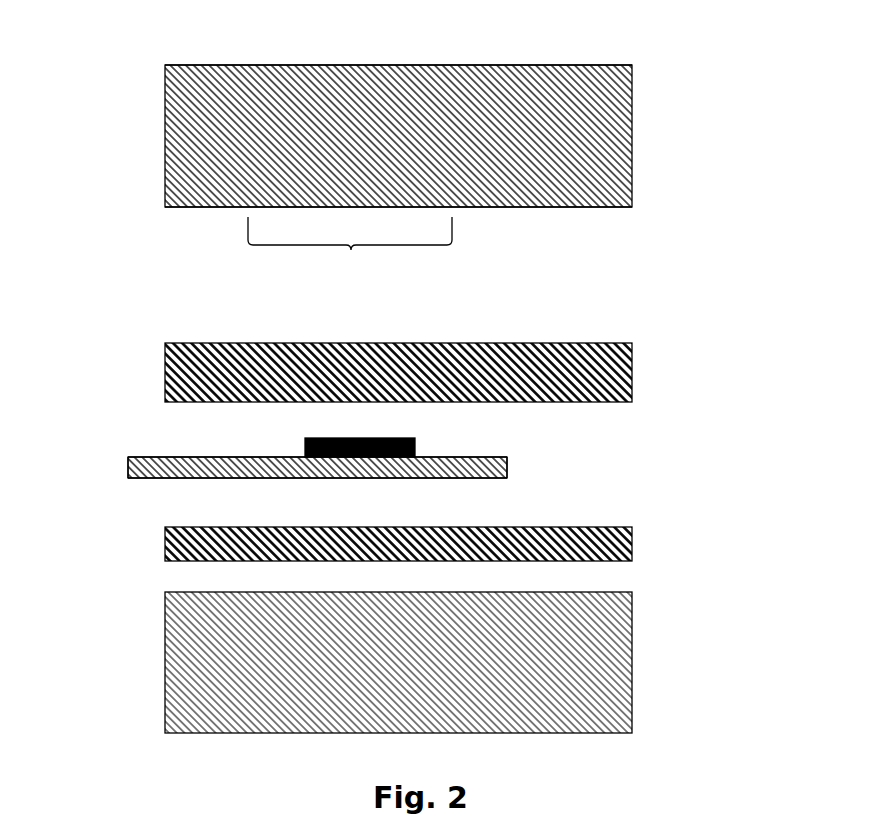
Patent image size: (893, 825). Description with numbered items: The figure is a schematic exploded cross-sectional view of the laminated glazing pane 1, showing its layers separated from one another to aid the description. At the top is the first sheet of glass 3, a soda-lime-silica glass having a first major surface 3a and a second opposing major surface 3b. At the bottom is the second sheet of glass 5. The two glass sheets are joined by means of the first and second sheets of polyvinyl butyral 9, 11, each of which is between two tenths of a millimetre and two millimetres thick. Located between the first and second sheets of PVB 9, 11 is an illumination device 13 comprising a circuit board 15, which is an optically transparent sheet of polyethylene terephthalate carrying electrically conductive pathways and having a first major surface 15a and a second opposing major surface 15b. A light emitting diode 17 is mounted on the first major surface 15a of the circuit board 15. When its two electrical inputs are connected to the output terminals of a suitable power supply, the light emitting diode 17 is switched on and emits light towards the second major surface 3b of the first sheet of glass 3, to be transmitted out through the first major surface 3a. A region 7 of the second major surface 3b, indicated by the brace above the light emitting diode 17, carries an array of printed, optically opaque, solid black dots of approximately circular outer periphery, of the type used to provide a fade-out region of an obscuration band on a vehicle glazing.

The laminated glazing pane 1 is at (682, 65).
The first sheet of glass 3 is at (188, 140).
The first major surface of the first sheet of glass 3a is at (553, 58).
The second major surface of the first sheet of glass 3b is at (207, 215).
The second sheet of glass 5 is at (188, 666).
The region of the second major surface 7 is at (351, 248).
The first sheet of polyvinyl butyral 9 is at (600, 381).
The second sheet of polyvinyl butyral 11 is at (603, 543).
The illumination device 13 is at (150, 484).
The circuit board 15 is at (128, 468).
The first major surface of the circuit board 15a is at (472, 451).
The second opposing major surface of the circuit board 15b is at (388, 486).
The light emitting diode 17 is at (305, 442).